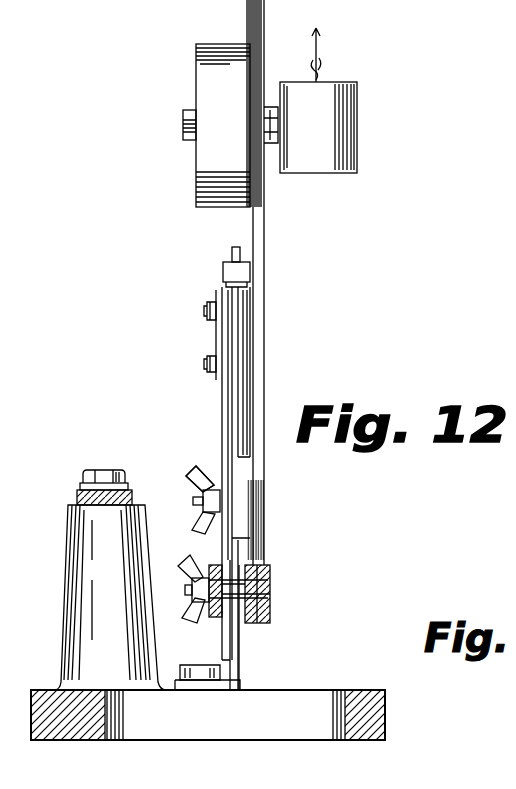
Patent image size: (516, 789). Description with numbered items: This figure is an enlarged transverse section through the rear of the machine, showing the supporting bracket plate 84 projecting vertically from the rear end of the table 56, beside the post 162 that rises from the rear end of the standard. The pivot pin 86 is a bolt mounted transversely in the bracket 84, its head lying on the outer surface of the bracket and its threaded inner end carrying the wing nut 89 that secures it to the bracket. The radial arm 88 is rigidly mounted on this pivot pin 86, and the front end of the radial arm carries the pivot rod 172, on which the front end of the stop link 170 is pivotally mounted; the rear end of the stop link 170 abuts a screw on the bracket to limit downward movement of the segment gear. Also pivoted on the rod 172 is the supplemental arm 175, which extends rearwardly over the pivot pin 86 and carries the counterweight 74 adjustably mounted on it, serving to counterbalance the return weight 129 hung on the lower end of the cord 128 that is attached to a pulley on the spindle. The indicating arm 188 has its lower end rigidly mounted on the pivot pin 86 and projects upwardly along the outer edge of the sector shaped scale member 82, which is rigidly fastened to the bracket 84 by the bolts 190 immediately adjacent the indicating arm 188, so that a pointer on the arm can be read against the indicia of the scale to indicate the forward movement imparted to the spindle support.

The table 56 is at (358, 690).
The counterweight 74 is at (215, 71).
The sector shaped scale member 82 is at (238, 316).
The supporting bracket plate 84 is at (222, 403).
The pivot pin 86 is at (196, 500).
The radial arm 88 is at (250, 540).
The wing nut 89 is at (205, 470).
The cord 128 is at (337, 41).
The return weight 129 is at (347, 110).
The post 162 is at (76, 516).
The stop link 170 is at (214, 638).
The pivot rod 172 is at (187, 567).
The supplemental arm 175 is at (256, 52).
The indicating arm 188 is at (235, 265).
The bolts 190 is at (205, 312).